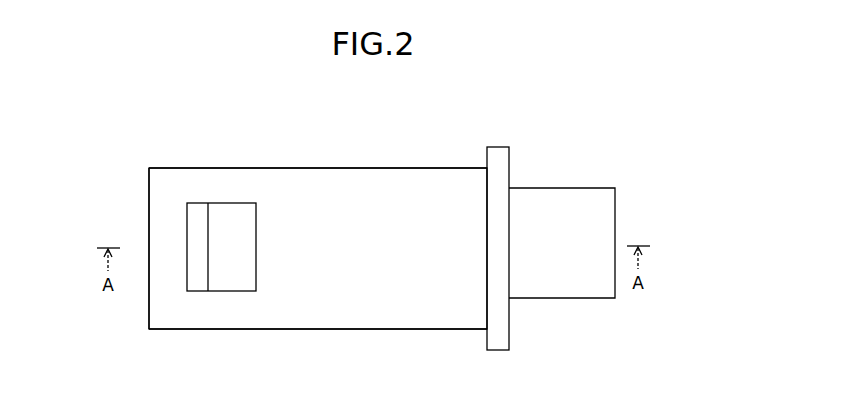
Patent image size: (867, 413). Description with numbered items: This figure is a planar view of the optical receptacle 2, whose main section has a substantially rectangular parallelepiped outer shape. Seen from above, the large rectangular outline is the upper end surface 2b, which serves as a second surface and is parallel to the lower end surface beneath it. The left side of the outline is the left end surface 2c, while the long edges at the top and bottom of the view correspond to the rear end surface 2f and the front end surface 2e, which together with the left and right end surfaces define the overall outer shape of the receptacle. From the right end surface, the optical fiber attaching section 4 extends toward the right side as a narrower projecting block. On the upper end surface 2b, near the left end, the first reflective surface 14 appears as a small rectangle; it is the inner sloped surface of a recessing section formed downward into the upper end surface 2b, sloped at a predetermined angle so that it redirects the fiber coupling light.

The optical receptacle 2 is at (183, 167).
The upper end surface 2b is at (287, 187).
The left end surface 2c is at (148, 250).
The front end surface 2e is at (392, 329).
The rear end surface 2f is at (408, 166).
The optical fiber attaching section 4 is at (570, 187).
The first reflective surface 14 is at (231, 272).